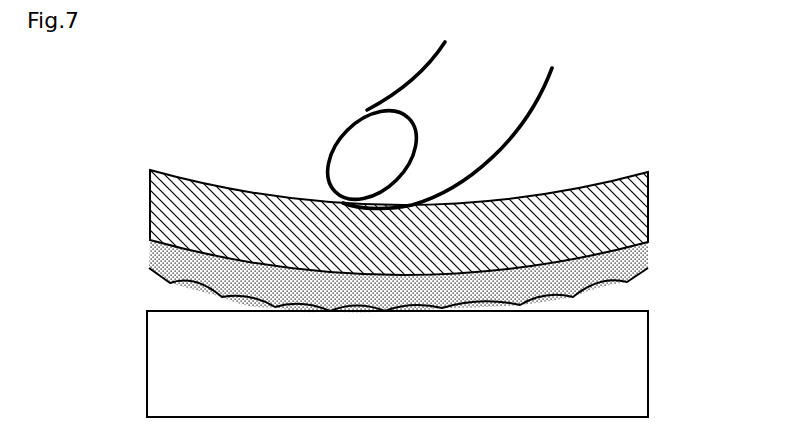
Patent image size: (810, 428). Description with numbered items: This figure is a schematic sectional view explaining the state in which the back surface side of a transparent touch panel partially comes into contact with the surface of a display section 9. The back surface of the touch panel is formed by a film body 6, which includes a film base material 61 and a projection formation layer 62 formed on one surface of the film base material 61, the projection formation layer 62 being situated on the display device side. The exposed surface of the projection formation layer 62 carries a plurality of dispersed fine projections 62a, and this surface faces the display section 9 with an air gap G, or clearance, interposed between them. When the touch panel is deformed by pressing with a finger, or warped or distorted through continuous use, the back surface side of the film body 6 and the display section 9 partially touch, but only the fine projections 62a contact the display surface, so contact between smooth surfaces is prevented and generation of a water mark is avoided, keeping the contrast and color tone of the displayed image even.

The film body 6 is at (471, 241).
The film base material 61 is at (635, 217).
The projection formation layer 62 is at (633, 260).
The fine projections 62a is at (148, 293).
The air gap G is at (622, 297).
The display section 9 is at (648, 370).